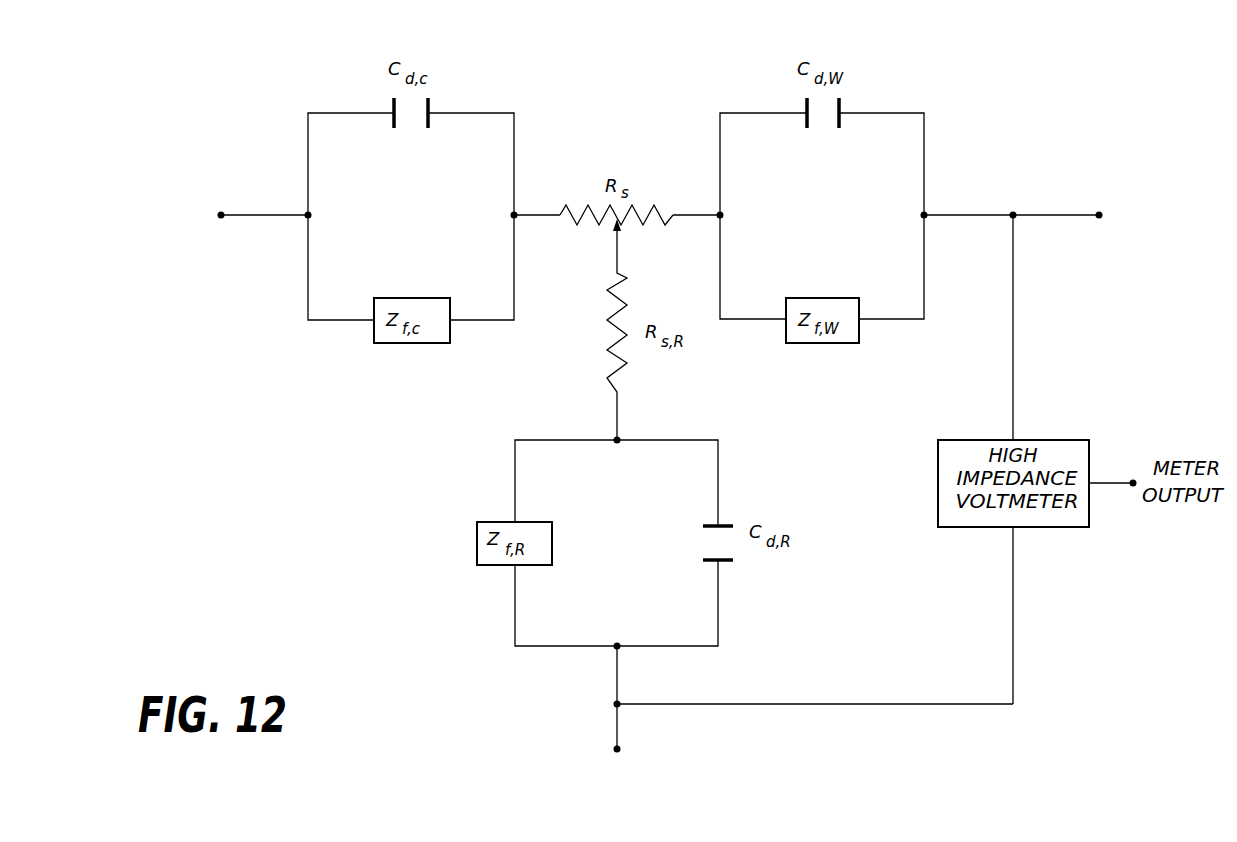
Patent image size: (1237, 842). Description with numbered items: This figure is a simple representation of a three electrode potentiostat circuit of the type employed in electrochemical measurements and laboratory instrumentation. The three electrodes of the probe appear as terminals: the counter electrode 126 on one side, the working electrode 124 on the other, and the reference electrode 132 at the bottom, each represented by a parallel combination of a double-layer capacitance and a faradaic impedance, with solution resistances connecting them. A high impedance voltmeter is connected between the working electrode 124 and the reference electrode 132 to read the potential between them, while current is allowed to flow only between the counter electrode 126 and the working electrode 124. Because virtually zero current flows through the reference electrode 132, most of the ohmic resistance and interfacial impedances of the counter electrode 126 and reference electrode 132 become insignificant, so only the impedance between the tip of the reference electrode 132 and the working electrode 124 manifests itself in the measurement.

The counter electrode 126 is at (198, 232).
The working electrode 124 is at (1078, 227).
The reference electrode 132 is at (785, 722).